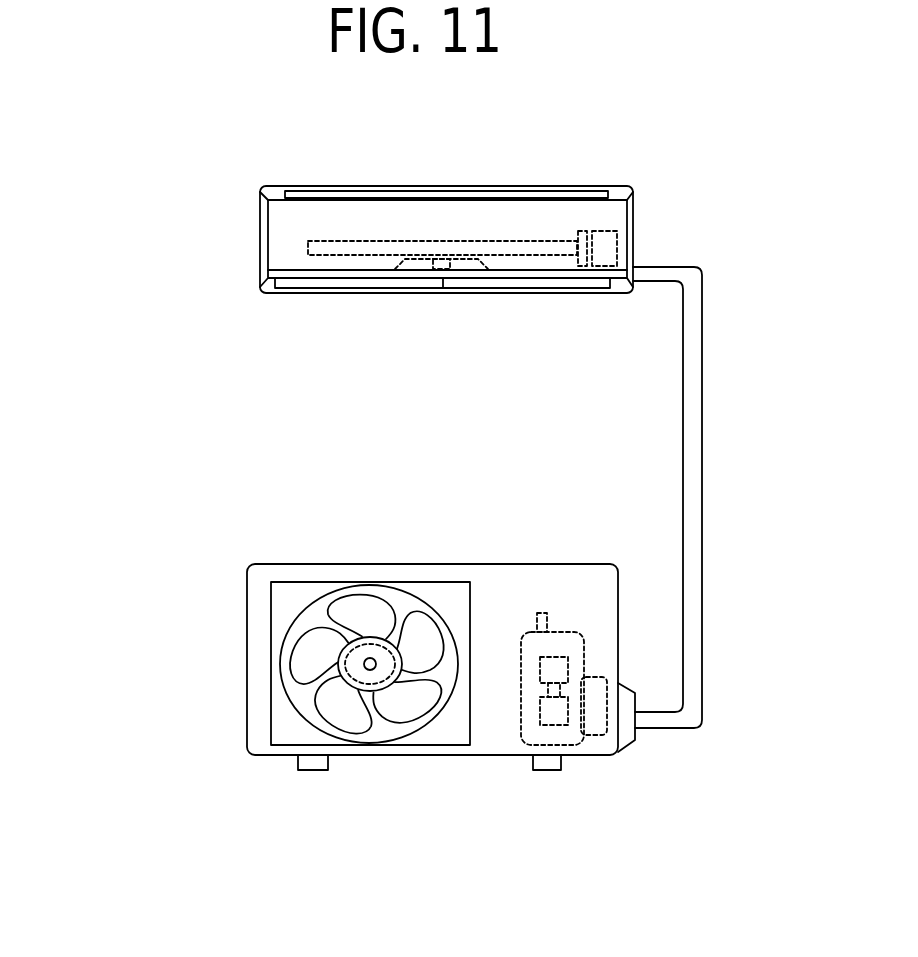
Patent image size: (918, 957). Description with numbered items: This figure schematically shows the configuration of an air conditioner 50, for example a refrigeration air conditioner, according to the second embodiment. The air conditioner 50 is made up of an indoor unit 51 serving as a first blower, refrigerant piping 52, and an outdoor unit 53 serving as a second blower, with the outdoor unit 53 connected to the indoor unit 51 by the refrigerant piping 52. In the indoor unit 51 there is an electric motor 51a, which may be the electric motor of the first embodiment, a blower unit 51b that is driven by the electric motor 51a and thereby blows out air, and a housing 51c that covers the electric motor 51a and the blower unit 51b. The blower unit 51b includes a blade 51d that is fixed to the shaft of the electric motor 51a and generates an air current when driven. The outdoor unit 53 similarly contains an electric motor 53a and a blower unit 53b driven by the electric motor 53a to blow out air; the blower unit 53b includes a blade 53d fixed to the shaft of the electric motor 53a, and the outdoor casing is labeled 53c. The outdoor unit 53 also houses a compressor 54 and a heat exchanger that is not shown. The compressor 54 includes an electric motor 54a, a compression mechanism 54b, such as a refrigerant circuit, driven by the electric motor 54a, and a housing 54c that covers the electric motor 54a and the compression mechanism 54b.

The air conditioner 50 is at (134, 174).
The indoor unit 51 is at (316, 162).
The electric motor 51a is at (617, 243).
The blower unit 51b is at (308, 248).
The housing 51c is at (437, 186).
The blade 51d is at (583, 268).
The refrigerant piping 52 is at (703, 435).
The outdoor unit 53 is at (318, 518).
The electric motor 53a is at (369, 690).
The blower unit 53b is at (270, 627).
The outdoor unit casing 53c is at (432, 563).
The blade 53d is at (300, 672).
The compressor 54 is at (507, 636).
The electric motor 54a is at (555, 660).
The compression mechanism 54b is at (553, 712).
The housing 54c is at (522, 743).